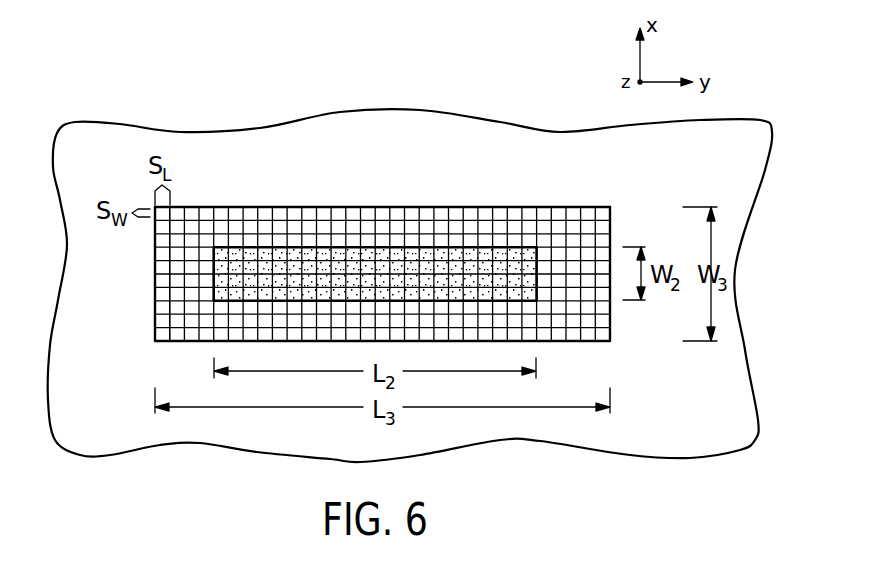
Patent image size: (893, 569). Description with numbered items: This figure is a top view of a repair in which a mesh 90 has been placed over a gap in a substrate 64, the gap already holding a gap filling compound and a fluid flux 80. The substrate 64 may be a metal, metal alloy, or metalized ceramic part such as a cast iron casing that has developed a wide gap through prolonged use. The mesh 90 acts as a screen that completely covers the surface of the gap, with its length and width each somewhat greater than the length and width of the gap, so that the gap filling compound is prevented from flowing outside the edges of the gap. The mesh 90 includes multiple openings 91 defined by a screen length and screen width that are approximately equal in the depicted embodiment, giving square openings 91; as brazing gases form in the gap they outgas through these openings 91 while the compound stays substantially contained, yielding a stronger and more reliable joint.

The substrate 64 is at (573, 177).
The fluid flux 80 is at (283, 256).
The mesh 90 is at (385, 207).
The openings 91 is at (165, 213).